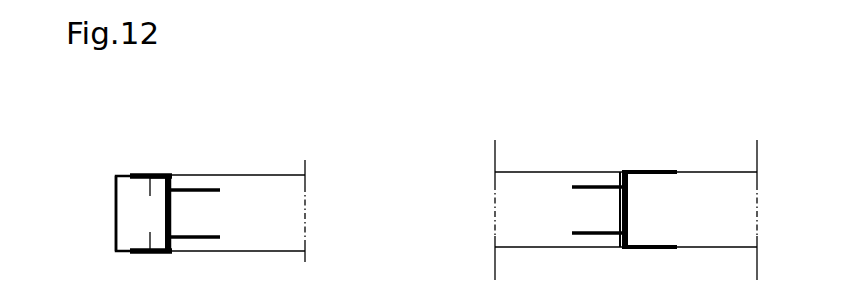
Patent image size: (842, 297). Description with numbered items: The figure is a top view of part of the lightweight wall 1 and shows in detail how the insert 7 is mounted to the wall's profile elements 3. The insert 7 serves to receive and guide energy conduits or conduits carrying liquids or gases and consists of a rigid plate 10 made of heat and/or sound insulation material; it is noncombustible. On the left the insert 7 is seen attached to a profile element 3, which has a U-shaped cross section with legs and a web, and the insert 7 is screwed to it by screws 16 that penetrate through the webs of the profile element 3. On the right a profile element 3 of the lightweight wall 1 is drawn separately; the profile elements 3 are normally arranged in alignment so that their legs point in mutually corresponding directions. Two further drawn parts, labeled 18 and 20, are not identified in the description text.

The lightweight wall 1 is at (147, 140).
The profile element 3 is at (370, 185).
The insert 7 is at (524, 140).
The rigid plate 10 is at (281, 185).
The screws 16 is at (183, 201).
The partition wall 18 is at (186, 212).
The seal / rib 20 is at (197, 162).